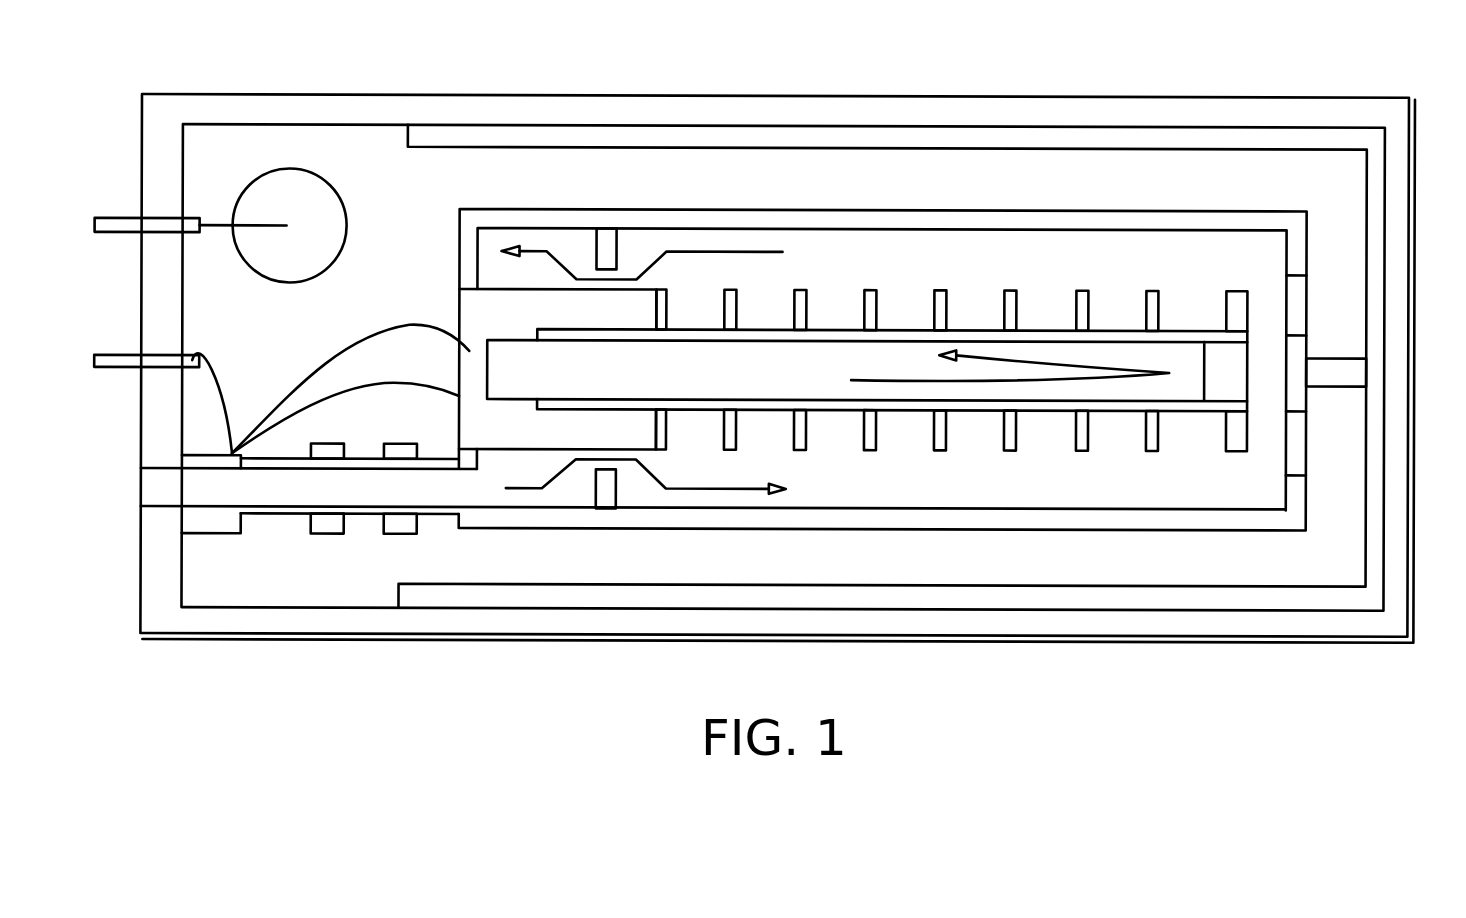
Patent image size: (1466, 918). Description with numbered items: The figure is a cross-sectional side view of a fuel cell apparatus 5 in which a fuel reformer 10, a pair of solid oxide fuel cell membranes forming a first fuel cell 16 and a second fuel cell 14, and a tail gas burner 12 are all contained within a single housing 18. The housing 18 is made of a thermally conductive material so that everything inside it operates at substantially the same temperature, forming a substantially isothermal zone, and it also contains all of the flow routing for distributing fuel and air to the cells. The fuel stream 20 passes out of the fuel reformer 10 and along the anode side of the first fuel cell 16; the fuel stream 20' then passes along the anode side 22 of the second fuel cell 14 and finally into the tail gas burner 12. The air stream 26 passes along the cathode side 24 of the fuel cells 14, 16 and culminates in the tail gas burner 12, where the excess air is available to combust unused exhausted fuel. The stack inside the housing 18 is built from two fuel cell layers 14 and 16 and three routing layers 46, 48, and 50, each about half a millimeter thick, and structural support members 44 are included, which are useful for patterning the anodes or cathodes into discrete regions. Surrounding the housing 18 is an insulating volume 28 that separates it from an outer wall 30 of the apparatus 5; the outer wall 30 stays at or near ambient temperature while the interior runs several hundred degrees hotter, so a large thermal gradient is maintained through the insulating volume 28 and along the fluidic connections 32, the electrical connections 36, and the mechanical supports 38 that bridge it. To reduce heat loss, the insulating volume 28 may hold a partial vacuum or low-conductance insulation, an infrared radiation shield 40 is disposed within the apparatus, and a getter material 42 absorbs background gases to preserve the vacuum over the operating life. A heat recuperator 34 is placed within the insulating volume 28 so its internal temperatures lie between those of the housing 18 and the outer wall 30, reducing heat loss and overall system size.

The fuel cell apparatus 5 is at (779, 342).
The fuel reformer 10 is at (573, 497).
The tail gas burner 12 is at (573, 240).
The second fuel cell (solid oxide fuel cell membrane) 14 is at (1043, 328).
The first fuel cell (solid oxide fuel cell membrane) 16 is at (1042, 410).
The housing 18 is at (1142, 208).
The fuel stream 20 is at (625, 482).
The fuel stream 20' is at (664, 259).
The anode side 22 is at (970, 313).
The cathode side 24 is at (693, 343).
The air stream 26 is at (867, 370).
The insulating volume 28 is at (1311, 193).
The outer wall 30 is at (1414, 178).
The fluidic connections 32 is at (262, 518).
The heat recuperator 34 is at (328, 535).
The electrical connections 36 is at (332, 353).
The mechanical supports 38 is at (1343, 356).
The infrared radiation shield 40 is at (1363, 465).
The getter material 42 is at (338, 191).
The structural support members 44 is at (947, 433).
The routing layer 46 is at (1298, 500).
The routing layer 48 is at (468, 352).
The routing layer 50 is at (467, 243).